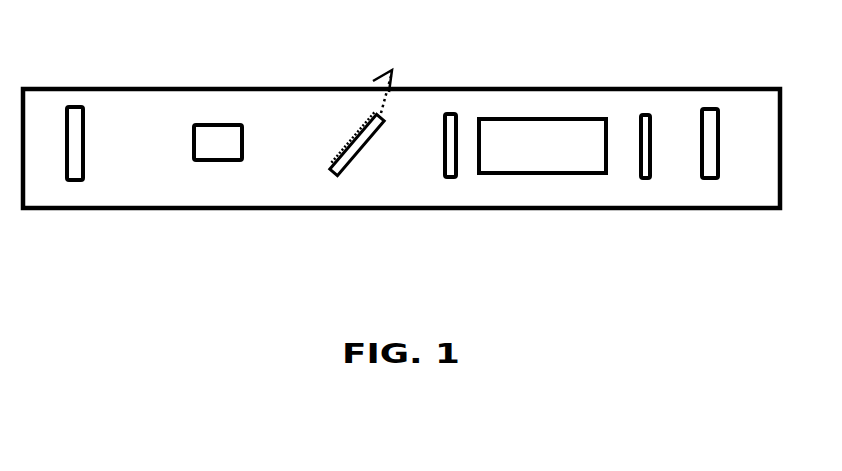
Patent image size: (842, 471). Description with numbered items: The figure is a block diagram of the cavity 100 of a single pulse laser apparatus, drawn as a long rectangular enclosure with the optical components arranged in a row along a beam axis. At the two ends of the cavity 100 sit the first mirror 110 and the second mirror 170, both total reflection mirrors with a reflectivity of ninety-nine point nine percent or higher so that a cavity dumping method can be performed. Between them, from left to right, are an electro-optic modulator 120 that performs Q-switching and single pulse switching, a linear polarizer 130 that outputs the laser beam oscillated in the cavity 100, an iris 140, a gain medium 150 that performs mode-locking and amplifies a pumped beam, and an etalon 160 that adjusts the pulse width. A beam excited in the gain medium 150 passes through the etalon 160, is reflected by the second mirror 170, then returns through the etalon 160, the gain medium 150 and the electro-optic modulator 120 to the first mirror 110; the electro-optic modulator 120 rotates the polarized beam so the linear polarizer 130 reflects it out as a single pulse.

The cavity 100 is at (414, 30).
The first mirror 110 is at (73, 183).
The electro-optic modulator (EOM) 120 is at (218, 163).
The linear polarizer 130 is at (334, 173).
The iris 140 is at (447, 179).
The gain medium 150 is at (540, 175).
The etalon 160 is at (646, 181).
The second mirror 170 is at (710, 181).